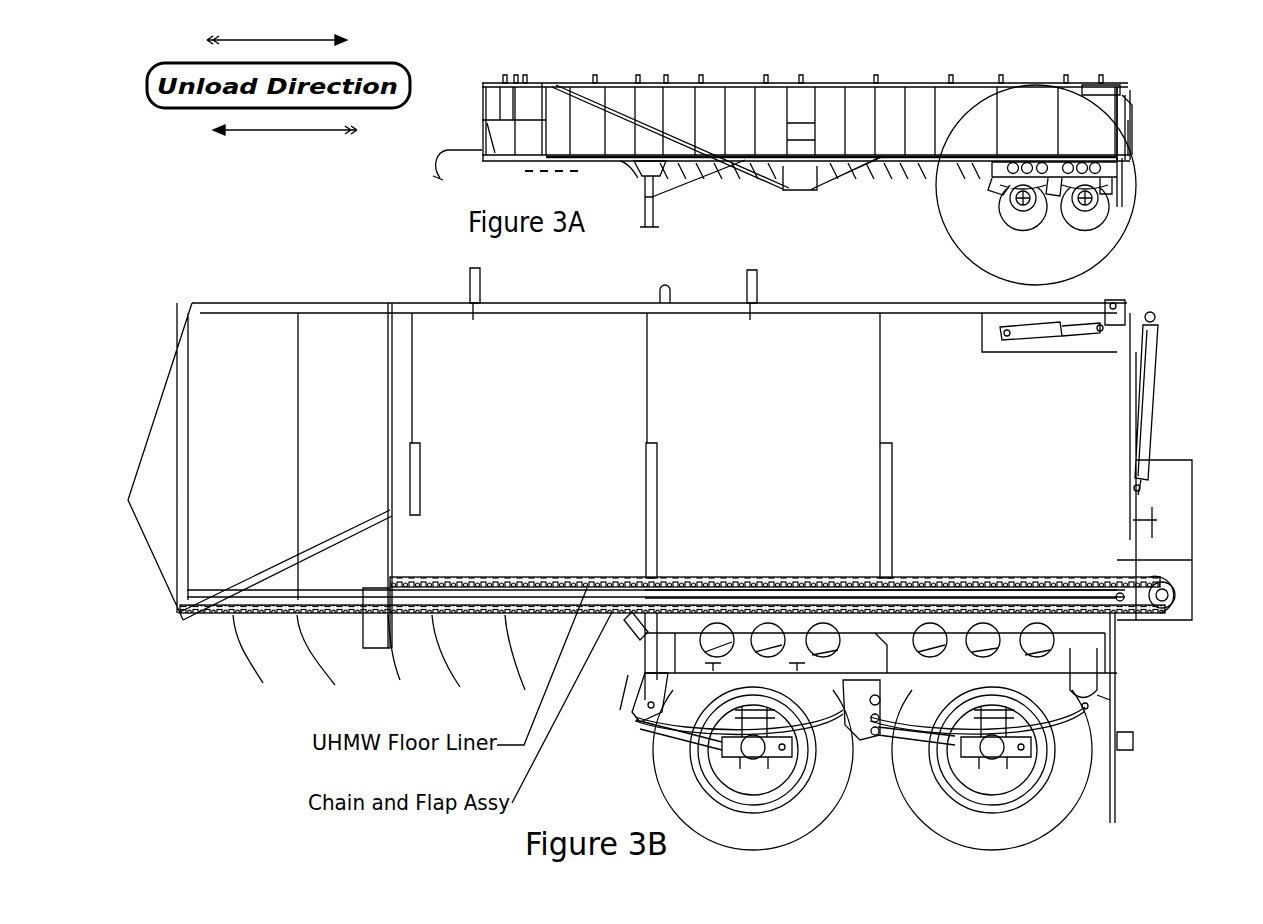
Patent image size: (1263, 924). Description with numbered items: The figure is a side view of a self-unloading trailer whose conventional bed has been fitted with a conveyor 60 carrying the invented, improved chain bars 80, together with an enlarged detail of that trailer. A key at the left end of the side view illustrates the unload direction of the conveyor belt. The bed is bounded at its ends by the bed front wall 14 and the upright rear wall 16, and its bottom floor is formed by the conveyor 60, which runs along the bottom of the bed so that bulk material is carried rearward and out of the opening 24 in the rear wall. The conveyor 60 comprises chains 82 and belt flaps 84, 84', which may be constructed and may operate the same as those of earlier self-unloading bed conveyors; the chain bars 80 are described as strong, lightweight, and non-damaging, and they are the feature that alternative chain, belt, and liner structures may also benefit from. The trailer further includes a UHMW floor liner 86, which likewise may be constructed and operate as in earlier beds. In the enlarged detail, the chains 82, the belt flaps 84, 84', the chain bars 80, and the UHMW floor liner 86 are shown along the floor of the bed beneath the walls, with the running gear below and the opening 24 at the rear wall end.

In FIG. 3A, the bed front wall 14 is at (482, 112).
In FIG. 3A, the upright rear wall 16 is at (1123, 110).
In FIG. 3A, the conveyor 60 is at (957, 148).
In FIG. 3B, the conveyor 60 is at (595, 493).
In FIG. 3B, the chain bar 80 is at (478, 578).
In FIG. 3B, the chains 82 is at (635, 578).
In FIG. 3B, the belt flap 84 is at (656, 545).
In FIG. 3B, the belt flap 84' is at (379, 670).
In FIG. 3B, the UHMW floor liner 86 is at (833, 577).
In FIG. 3B, the opening 24 is at (1143, 566).